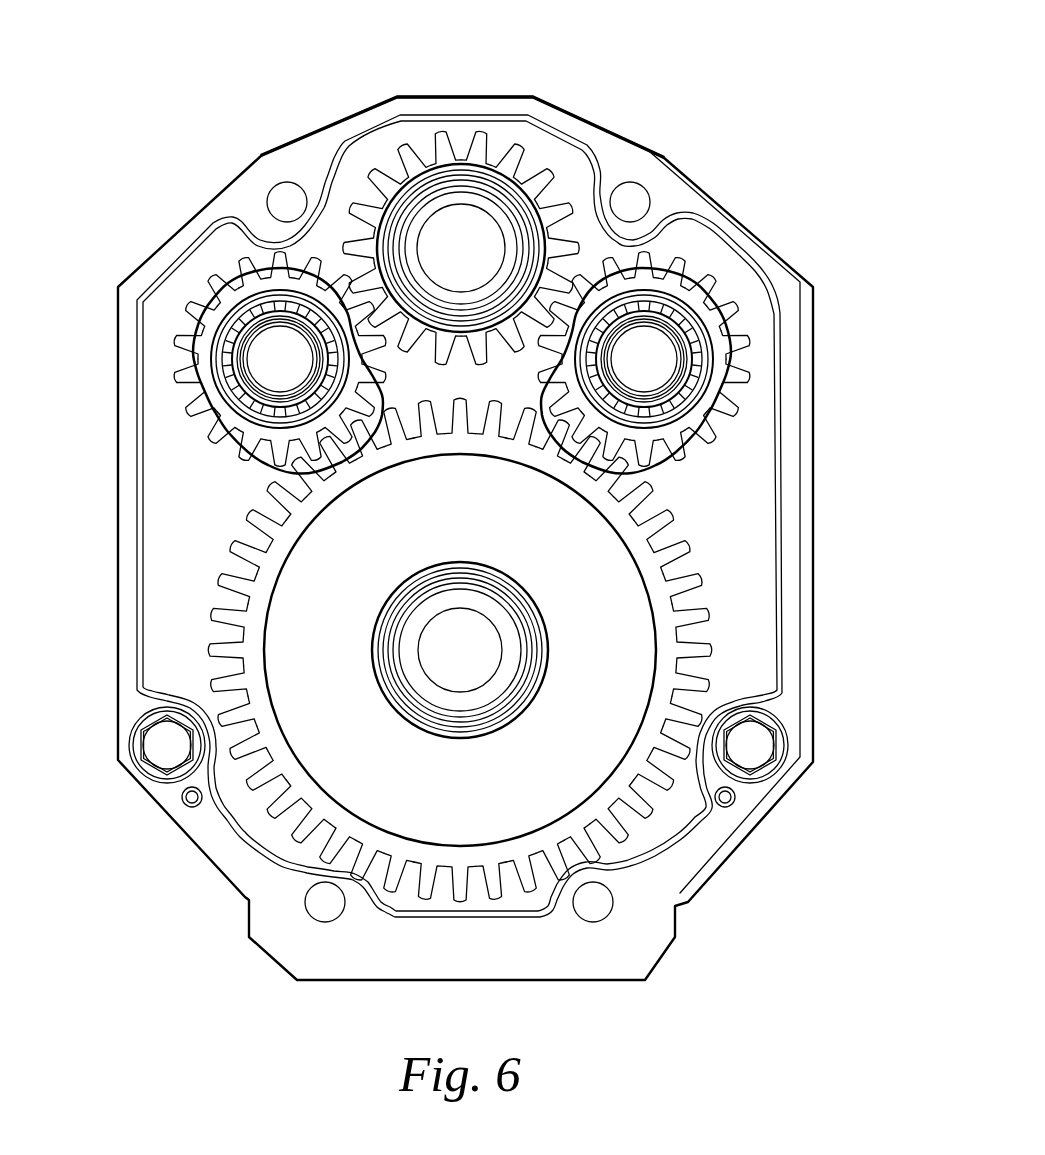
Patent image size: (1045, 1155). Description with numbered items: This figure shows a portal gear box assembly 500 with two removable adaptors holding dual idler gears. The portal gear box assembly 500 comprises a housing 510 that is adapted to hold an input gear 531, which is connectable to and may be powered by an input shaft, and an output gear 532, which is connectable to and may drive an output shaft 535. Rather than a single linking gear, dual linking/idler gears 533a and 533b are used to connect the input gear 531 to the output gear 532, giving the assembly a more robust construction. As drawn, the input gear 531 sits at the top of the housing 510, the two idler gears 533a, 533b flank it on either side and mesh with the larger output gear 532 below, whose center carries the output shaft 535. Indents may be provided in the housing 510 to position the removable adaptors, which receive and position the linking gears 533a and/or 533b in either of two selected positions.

The portal gear box assembly 500 is at (166, 124).
The housing 510 is at (802, 510).
The input gear 531 is at (483, 148).
The output gear 532 is at (292, 815).
The linking/idler gear 533a is at (180, 354).
The linking/idler gear 533b is at (740, 318).
The output shaft 535 is at (507, 663).